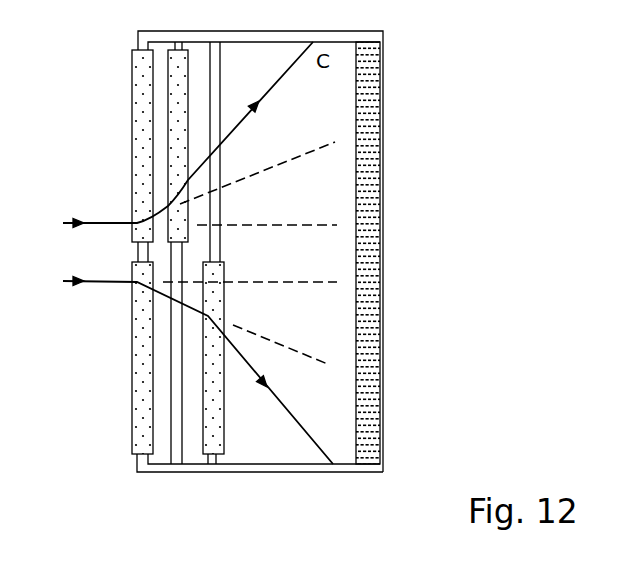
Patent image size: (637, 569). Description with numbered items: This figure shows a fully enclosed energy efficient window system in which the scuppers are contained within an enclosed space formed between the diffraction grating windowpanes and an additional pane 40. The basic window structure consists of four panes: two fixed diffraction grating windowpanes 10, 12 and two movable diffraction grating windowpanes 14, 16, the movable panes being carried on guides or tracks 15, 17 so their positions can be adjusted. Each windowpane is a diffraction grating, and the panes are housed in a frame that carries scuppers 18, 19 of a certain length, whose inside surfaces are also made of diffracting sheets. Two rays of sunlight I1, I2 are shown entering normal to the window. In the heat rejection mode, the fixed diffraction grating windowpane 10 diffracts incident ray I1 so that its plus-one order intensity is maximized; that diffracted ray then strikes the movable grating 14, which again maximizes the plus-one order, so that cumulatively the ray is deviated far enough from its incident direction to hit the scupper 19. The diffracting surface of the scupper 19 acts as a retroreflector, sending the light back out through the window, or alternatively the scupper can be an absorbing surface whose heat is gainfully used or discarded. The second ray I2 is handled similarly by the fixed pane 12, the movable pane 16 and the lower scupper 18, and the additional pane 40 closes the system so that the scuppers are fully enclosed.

The fixed diffraction grating windowpane 10 is at (132, 90).
The fixed diffraction grating windowpane 12 is at (127, 398).
The movable diffraction grating windowpane 14 is at (167, 113).
The guide or track 15 is at (180, 447).
The movable diffraction grating windowpane 16 is at (225, 407).
The guide or track 17 is at (220, 115).
The scupper 18 is at (288, 473).
The scupper 19 is at (333, 31).
The additional pane 40 is at (382, 265).
The incident ray of sunlight I1 is at (175, 140).
The incident ray of sunlight I2 is at (185, 365).